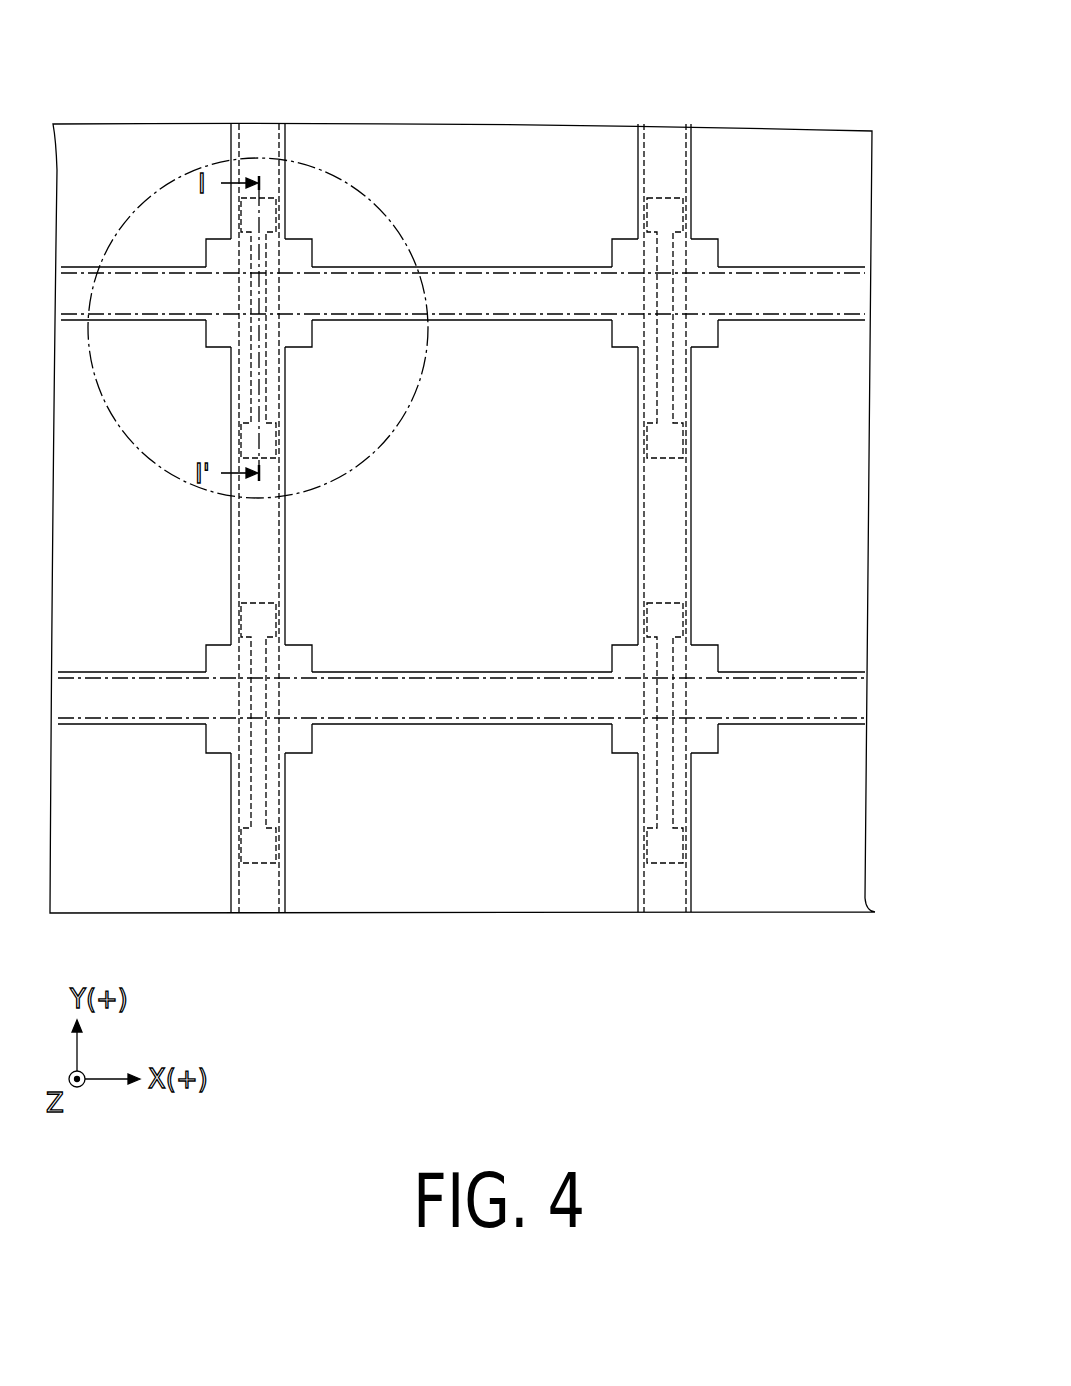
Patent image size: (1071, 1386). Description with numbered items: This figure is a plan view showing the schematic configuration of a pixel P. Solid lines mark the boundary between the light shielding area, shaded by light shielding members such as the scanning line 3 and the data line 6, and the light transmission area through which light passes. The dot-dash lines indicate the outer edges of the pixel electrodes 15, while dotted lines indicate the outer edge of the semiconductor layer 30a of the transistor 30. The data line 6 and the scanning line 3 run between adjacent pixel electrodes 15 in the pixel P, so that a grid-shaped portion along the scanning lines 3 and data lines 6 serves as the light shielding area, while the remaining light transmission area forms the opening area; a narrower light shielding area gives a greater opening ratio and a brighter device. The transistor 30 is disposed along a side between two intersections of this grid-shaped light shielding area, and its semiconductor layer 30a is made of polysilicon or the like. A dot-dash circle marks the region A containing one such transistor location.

The scanning line 3 is at (866, 295).
The data line 6 is at (668, 150).
The pixel electrode 15 is at (517, 390).
The transistor 30 is at (703, 255).
The semiconductor layer 30a is at (663, 402).
The pixel P is at (866, 76).
The region A is at (404, 219).